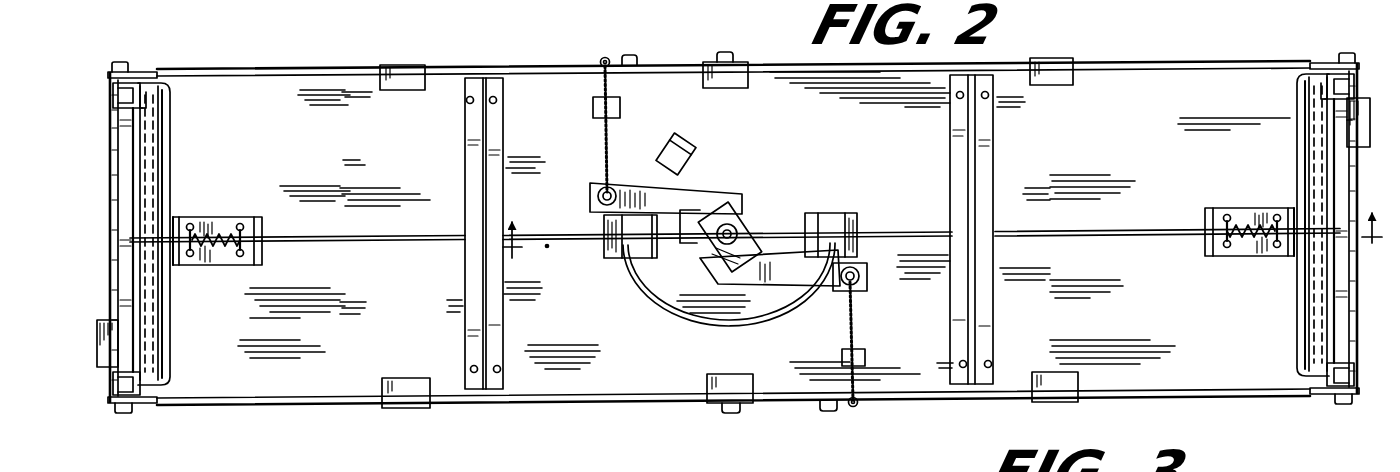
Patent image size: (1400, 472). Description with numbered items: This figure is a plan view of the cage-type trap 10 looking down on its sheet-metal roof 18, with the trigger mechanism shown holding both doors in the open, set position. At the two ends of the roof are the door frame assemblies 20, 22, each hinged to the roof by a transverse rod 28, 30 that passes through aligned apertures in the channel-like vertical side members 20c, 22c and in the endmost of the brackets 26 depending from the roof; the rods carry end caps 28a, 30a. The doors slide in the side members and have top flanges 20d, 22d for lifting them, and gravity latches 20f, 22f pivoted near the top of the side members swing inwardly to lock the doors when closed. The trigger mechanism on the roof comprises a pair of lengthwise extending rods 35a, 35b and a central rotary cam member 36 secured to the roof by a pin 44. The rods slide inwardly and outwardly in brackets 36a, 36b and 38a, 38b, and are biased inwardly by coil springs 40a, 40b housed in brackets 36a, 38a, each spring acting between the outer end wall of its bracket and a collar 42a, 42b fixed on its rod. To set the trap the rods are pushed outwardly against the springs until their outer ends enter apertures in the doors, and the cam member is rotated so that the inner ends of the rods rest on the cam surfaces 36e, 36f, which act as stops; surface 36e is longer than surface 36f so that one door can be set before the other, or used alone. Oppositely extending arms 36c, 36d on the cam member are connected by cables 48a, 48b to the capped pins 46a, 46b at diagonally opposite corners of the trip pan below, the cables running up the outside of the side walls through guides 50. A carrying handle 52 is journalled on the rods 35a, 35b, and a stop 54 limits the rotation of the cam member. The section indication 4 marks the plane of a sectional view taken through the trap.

The section line 4- 4 is at (942, 245).
The cage-type trap 10 is at (318, 68).
The roof 18 is at (278, 97).
The door frame assembly 20 is at (108, 200).
The vertical side member 20c is at (163, 85).
The top flange 20d is at (158, 163).
The gravity latch 20f is at (113, 342).
The door frame assembly 22 is at (1365, 167).
The vertical side member 22c is at (1305, 68).
The top flange 22d is at (1307, 325).
The gravity latch 22f is at (1350, 132).
The bracket 26 is at (390, 90).
The transverse rod 28 is at (127, 125).
The end cap 28a is at (128, 64).
The transverse rod 30 is at (1345, 178).
The end cap 30a is at (1328, 53).
The lengthwise extending rod 35a is at (403, 246).
The lengthwise extending rod 35b is at (935, 227).
The central rotary cam member 36 is at (755, 215).
The bracket 36a is at (213, 265).
The bracket 36b is at (607, 263).
The arm 36c is at (607, 180).
The arm 36d is at (828, 293).
The cam surface 36e is at (693, 242).
The cam surface 36f is at (793, 240).
The bracket 38a is at (1223, 257).
The bracket 38b is at (853, 220).
The coil spring 40a is at (200, 217).
The coil spring 40b is at (1260, 260).
The collar 42a is at (245, 220).
The collar 42b is at (1218, 217).
The pin 44 is at (752, 212).
The capped pin 46a is at (637, 57).
The capped pin 46b is at (828, 411).
The cable 48a is at (597, 90).
The cable 48b is at (860, 333).
The guide 50 is at (600, 62).
The carrying handle 52 is at (670, 316).
The stop 54 is at (692, 173).